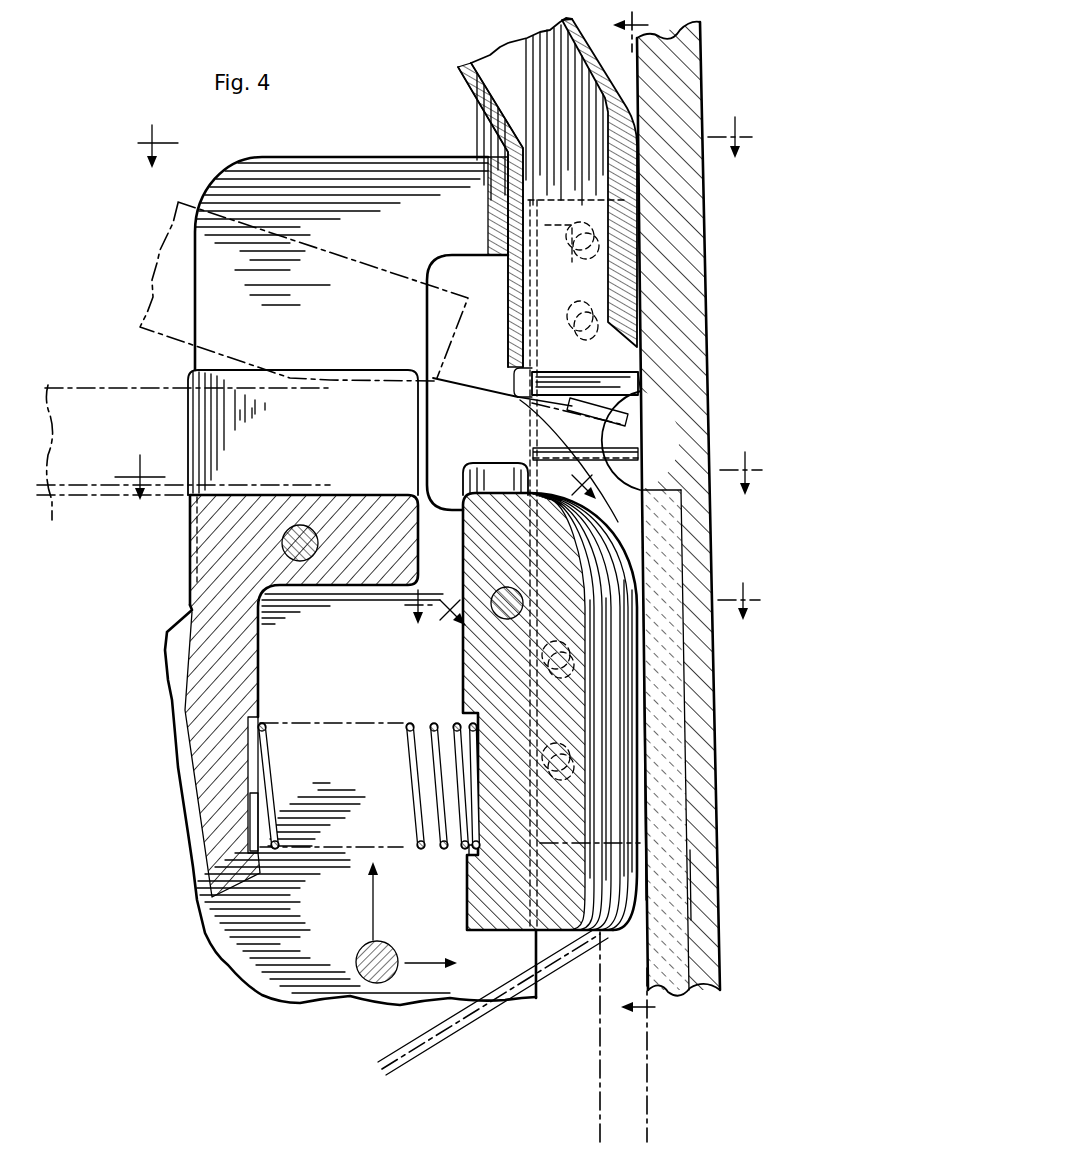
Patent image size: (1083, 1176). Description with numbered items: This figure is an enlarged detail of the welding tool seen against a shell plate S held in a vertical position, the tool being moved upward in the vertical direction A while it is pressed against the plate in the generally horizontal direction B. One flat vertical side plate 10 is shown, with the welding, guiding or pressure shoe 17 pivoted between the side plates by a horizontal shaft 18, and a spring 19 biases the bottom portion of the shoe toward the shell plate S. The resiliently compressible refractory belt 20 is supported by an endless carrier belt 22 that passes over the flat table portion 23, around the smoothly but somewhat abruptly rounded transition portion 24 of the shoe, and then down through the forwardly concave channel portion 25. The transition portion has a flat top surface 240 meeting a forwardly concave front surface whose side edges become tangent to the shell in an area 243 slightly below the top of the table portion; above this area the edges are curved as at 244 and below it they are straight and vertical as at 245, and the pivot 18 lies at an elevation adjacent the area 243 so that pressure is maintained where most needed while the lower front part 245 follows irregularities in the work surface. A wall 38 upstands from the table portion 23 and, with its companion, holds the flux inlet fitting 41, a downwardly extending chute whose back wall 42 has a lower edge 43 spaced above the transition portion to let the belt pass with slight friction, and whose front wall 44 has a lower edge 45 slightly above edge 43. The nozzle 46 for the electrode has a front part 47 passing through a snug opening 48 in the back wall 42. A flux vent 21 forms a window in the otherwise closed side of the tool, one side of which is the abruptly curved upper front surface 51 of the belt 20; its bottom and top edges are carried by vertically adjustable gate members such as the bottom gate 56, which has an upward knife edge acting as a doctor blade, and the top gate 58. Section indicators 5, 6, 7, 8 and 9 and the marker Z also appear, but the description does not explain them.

The section line 5- 5 is at (642, 577).
The section line 6- 6 is at (442, 140).
The section line 7- 7 is at (438, 472).
The section line 8- 8 is at (578, 608).
The section line 9- 9 is at (514, 546).
The side plate 10 is at (278, 1002).
The welding shoe 17 is at (561, 565).
The horizontal shaft 18 is at (500, 610).
The spring 19 is at (410, 850).
The resiliently compressible refractory belt 20 is at (85, 388).
The flux vent 21 is at (645, 390).
The endless carrier belt 22 is at (50, 508).
The table portion 23 is at (270, 492).
The transition portion 24 is at (572, 538).
The channel portion 25 is at (644, 742).
The wall 38 is at (192, 380).
The flux inlet fitting 41 is at (576, 231).
The back wall 42 is at (525, 183).
The lower edge 43 is at (518, 397).
The front wall 44 is at (618, 270).
The lower edge 45 is at (625, 337).
The nozzle 46 is at (318, 250).
The front part 47 is at (337, 290).
The opening 48 is at (512, 385).
The upper front surface 51 is at (574, 460).
The bottom gate member 56 is at (531, 458).
The top gate member 58 is at (642, 380).
The flat top surface 240 is at (492, 483).
The area of tangent approach 243 is at (640, 606).
The curved side edge portion 244 is at (627, 565).
The lower front part 245 is at (644, 660).
The shell plate S is at (690, 60).
The zone Z is at (672, 885).
The vertical direction A is at (362, 897).
The horizontal direction B is at (440, 971).